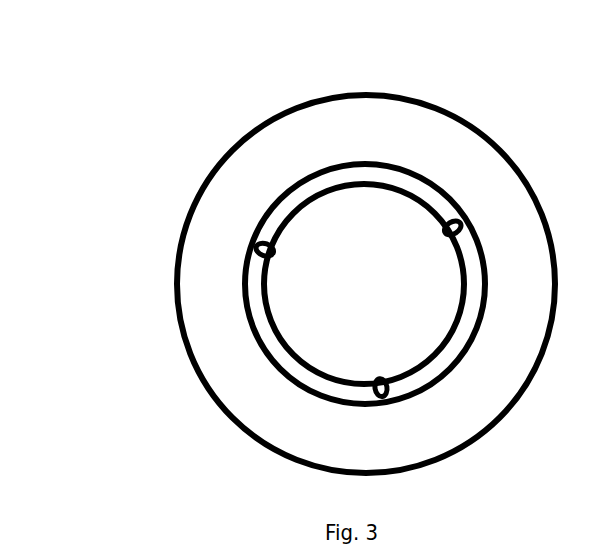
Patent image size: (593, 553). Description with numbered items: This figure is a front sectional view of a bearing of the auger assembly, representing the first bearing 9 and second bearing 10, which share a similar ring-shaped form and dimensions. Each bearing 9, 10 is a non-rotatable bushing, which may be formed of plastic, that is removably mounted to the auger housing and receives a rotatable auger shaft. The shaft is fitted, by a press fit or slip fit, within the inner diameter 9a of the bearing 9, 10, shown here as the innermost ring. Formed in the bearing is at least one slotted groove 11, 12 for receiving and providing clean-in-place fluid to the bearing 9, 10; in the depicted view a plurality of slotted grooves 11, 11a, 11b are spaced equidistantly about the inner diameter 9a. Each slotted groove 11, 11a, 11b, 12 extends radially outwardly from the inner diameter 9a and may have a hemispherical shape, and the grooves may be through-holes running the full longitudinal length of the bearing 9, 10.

The first bearing 9 is at (312, 284).
The second bearing 10 is at (172, 187).
The inner diameter 9a is at (310, 197).
The slotted groove 11 is at (263, 284).
The slotted groove 12 is at (263, 263).
The slotted groove 11a is at (460, 208).
The slotted groove 11b is at (397, 385).